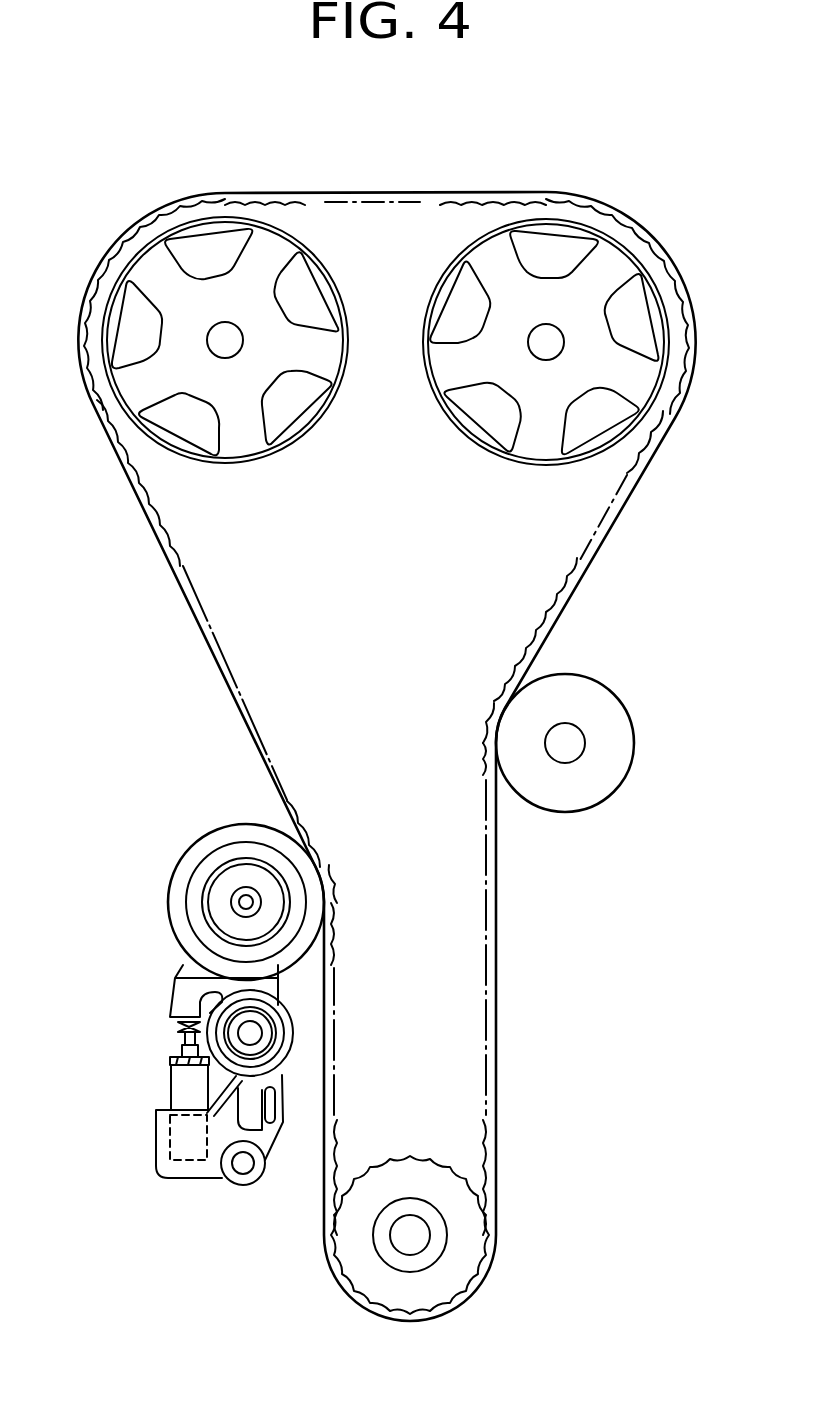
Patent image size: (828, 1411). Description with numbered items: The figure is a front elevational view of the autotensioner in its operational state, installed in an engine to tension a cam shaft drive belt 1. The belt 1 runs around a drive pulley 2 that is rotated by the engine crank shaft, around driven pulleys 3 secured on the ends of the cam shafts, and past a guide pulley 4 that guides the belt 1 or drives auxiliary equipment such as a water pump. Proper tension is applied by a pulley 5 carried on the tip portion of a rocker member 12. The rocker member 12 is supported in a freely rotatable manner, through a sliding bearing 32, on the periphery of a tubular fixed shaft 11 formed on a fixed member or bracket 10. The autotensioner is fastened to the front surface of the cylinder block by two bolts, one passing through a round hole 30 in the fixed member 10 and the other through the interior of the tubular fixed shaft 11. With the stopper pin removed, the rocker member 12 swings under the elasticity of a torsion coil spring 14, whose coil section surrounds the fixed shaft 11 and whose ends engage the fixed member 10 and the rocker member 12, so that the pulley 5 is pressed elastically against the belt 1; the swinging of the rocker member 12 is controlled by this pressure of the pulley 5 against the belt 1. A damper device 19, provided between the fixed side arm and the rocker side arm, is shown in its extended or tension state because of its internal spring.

The belt 1 is at (498, 882).
The drive pulley 2 is at (458, 1273).
The driven pulley 3 is at (490, 247).
The guide pulley 4 is at (615, 765).
The pulley 5 is at (171, 897).
The bracket 10 is at (178, 1170).
The fixed shaft 11 is at (262, 1038).
The rocker member 12 is at (280, 990).
The torsion coil spring 14 is at (300, 1040).
The damper device 19 is at (178, 1090).
The round hole 30 is at (242, 1170).
The sliding bearing 32 is at (213, 1027).